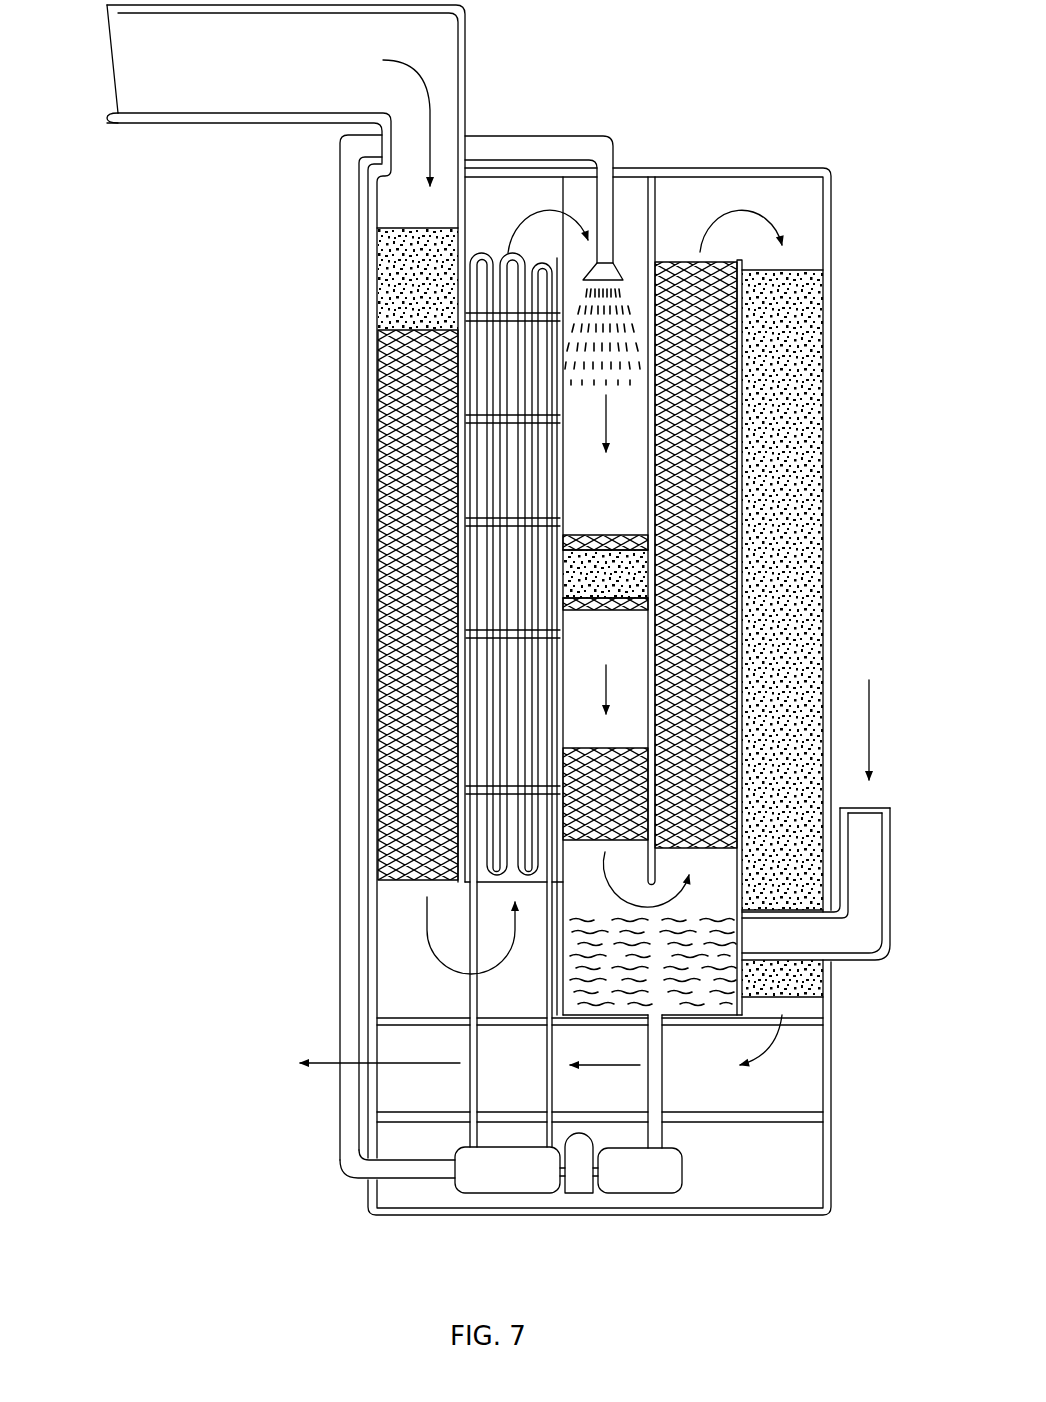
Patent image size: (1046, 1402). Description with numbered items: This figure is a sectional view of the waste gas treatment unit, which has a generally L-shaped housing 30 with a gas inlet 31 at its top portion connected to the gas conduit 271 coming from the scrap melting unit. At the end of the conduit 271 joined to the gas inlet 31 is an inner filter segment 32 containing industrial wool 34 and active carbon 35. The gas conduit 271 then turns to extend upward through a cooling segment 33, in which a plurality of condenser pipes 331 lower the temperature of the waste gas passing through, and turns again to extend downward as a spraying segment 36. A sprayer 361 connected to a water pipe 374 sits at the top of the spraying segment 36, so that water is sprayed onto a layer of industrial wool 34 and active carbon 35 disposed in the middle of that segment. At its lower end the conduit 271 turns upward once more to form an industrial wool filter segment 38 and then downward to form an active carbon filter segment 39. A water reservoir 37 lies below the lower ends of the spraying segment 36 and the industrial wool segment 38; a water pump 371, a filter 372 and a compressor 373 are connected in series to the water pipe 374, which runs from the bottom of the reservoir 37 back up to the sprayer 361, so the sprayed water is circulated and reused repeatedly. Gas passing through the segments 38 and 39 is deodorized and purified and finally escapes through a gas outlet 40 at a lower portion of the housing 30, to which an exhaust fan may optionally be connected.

The housing 30 is at (828, 597).
The gas inlet 31 is at (118, 90).
The gas conduit 271 is at (222, 95).
The inner filter segment 32 is at (408, 223).
The cooling segment 33 is at (491, 240).
The condenser pipes 331 is at (480, 577).
The industrial wool 34 is at (400, 500).
The active carbon 35 is at (400, 283).
The spraying segment 36 is at (630, 256).
The sprayer 361 is at (597, 274).
The water reservoir 37 is at (702, 995).
The water pump 371 is at (650, 1180).
The filter 372 is at (578, 1180).
The compressor 373 is at (490, 1174).
The water pipe 374 is at (356, 880).
The industrial wool filter segment 38 is at (678, 253).
The active carbon filter segment 39 is at (795, 260).
The gas outlet 40 is at (375, 1077).